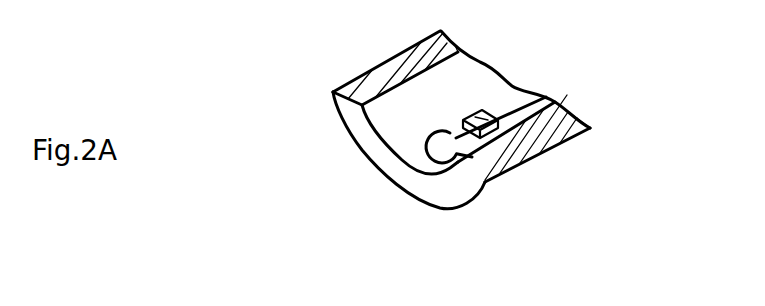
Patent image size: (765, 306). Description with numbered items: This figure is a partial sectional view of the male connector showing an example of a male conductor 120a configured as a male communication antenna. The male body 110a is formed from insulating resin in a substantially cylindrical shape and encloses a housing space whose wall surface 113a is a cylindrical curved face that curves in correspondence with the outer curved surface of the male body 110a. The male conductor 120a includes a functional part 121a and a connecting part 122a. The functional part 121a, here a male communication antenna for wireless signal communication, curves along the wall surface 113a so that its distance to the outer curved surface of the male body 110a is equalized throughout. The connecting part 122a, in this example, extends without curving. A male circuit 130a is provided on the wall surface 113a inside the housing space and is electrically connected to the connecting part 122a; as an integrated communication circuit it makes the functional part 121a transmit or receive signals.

The male body 110a is at (365, 142).
The wall surface 113a is at (430, 100).
The male conductor 120a is at (461, 201).
The functional part 121a is at (420, 158).
The connecting part 122a is at (487, 140).
The male circuit 130a is at (519, 156).